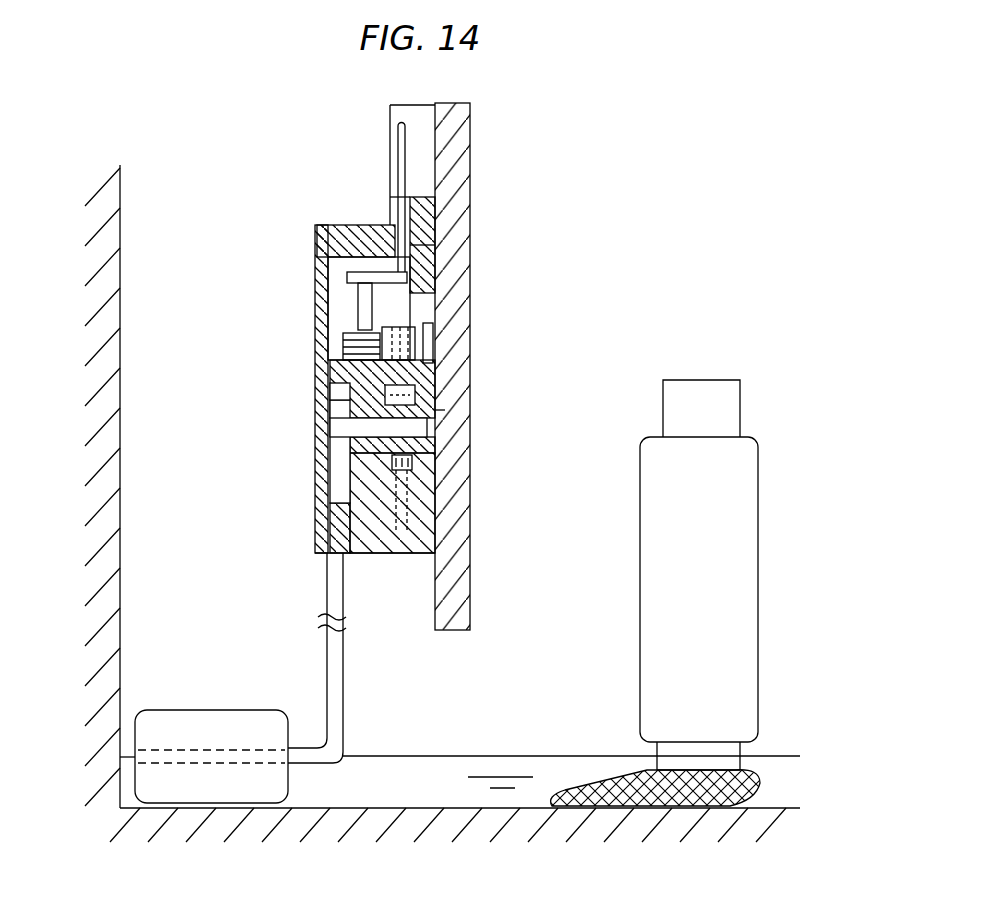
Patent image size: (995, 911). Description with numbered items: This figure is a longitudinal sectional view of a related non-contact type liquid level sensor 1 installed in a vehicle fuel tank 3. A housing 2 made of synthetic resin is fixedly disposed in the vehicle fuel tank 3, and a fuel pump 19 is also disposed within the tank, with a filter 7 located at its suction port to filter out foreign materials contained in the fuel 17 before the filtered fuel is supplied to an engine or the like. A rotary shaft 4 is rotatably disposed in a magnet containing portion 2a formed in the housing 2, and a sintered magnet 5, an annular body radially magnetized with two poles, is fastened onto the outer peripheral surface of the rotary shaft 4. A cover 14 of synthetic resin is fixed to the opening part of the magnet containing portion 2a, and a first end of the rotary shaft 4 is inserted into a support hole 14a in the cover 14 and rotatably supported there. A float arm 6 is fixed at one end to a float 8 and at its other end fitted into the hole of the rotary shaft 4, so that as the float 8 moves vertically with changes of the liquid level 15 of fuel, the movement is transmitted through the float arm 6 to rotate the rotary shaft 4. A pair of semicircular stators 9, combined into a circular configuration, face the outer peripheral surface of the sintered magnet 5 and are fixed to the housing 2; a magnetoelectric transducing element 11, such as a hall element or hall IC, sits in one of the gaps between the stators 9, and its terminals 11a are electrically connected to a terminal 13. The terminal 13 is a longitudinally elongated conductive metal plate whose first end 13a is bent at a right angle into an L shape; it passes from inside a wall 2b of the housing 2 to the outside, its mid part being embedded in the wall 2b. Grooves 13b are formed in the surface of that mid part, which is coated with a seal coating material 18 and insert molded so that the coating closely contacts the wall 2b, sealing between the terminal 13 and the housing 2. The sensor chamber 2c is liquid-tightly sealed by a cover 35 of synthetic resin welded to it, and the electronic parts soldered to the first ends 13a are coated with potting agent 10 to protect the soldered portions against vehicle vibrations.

The non-contact type liquid level sensor 1 is at (252, 186).
The housing 2 is at (387, 329).
The magnet containing portion 2a is at (333, 426).
The wall 2b is at (356, 225).
The sensor chamber 2c is at (333, 316).
The vehicle fuel tank 3 is at (120, 521).
The rotary shaft 4 is at (330, 392).
The sintered magnet 5 is at (430, 401).
The float arm 6 is at (327, 598).
The filter 7 is at (757, 790).
The float 8 is at (190, 710).
The stators 9 is at (440, 516).
The potting agent 10 is at (420, 288).
The magnetoelectric transducing element 11 is at (393, 316).
The terminals 11a is at (345, 350).
The terminal 13 is at (407, 145).
The first end 13a is at (345, 286).
The grooves 13b is at (432, 247).
The cover 14 is at (458, 486).
The support hole 14a is at (440, 412).
The liquid level 15 is at (407, 756).
The fuel 17 is at (455, 770).
The seal coating material 18 is at (320, 225).
The fuel pump 19 is at (640, 581).
The cover 35 is at (322, 473).